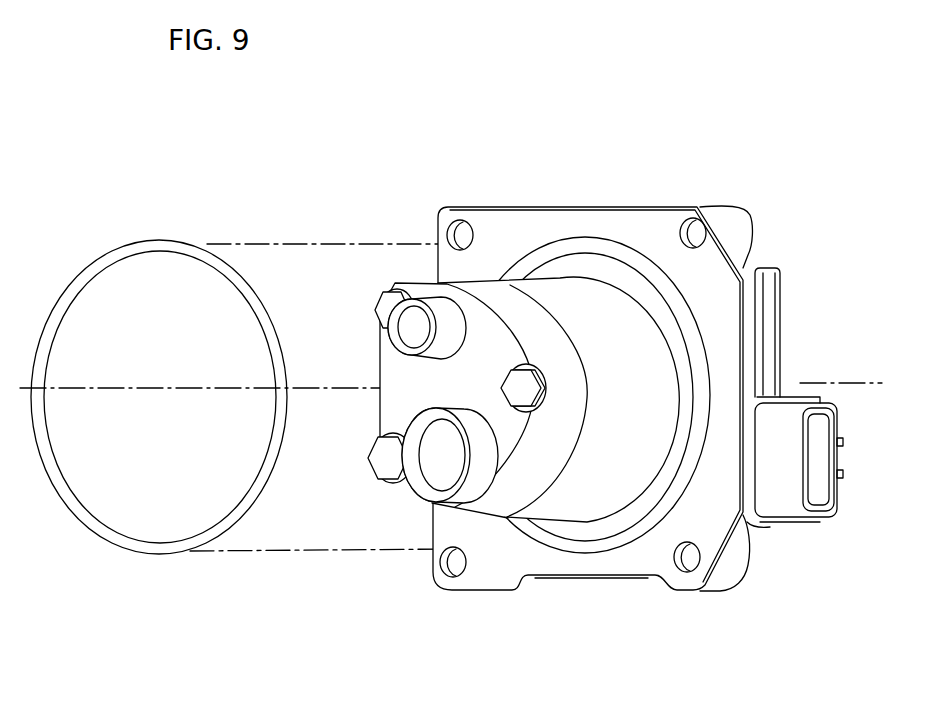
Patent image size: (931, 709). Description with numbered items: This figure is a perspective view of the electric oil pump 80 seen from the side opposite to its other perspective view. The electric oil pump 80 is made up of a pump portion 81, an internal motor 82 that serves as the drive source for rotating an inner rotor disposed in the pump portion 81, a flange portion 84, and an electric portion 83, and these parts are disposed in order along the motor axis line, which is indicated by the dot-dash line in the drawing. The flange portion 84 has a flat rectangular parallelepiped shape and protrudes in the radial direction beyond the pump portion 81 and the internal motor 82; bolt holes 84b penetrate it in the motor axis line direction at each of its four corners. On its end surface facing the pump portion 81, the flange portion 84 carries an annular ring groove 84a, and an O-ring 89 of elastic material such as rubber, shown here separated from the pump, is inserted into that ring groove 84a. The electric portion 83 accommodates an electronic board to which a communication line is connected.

The electric oil pump 80 is at (660, 118).
The pump portion 81 is at (475, 513).
The internal motor 82 is at (533, 523).
The electric portion 83 is at (780, 327).
The flange portion 84 is at (748, 533).
The ring groove 84a is at (597, 249).
The bolt holes 84b is at (460, 220).
The O-ring 89 is at (163, 239).